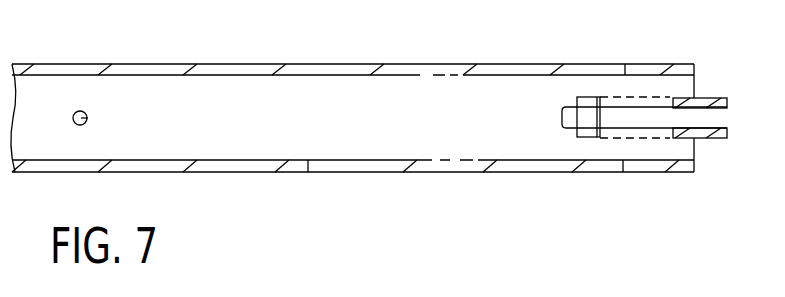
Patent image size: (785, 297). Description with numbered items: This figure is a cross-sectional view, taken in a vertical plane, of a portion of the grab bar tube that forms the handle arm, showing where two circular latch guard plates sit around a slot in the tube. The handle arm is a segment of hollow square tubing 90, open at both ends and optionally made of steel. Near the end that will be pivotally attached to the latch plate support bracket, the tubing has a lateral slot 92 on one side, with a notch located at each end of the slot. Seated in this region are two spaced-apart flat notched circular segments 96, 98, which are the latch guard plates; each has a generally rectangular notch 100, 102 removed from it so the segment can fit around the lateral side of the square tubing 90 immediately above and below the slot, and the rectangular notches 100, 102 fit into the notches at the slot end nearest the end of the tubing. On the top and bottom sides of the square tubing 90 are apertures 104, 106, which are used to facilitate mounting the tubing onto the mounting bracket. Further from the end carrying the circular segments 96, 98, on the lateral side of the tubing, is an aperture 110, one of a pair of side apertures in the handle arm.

The hollow square tubing 90 is at (394, 63).
The lateral slot 92 is at (566, 111).
The notched circular segment 96 is at (728, 103).
The notched circular segment 98 is at (729, 139).
The rectangular notch 100 is at (671, 106).
The rectangular notch 102 is at (665, 133).
The aperture 104 is at (652, 64).
The aperture 106 is at (625, 163).
The aperture 110 is at (88, 119).